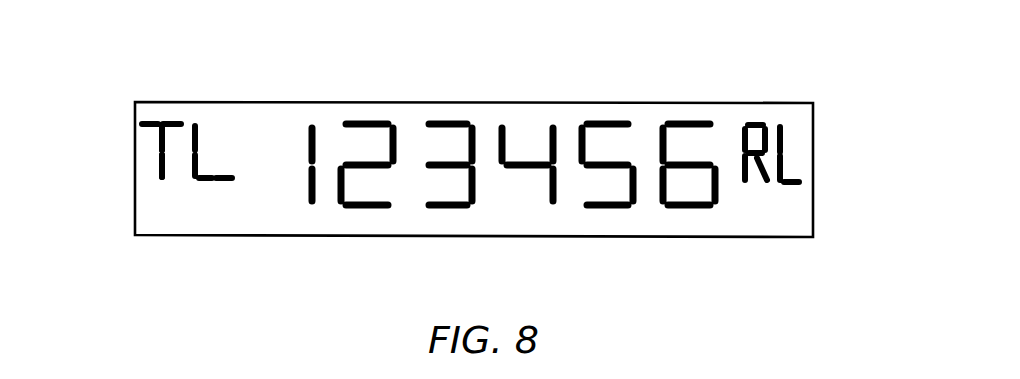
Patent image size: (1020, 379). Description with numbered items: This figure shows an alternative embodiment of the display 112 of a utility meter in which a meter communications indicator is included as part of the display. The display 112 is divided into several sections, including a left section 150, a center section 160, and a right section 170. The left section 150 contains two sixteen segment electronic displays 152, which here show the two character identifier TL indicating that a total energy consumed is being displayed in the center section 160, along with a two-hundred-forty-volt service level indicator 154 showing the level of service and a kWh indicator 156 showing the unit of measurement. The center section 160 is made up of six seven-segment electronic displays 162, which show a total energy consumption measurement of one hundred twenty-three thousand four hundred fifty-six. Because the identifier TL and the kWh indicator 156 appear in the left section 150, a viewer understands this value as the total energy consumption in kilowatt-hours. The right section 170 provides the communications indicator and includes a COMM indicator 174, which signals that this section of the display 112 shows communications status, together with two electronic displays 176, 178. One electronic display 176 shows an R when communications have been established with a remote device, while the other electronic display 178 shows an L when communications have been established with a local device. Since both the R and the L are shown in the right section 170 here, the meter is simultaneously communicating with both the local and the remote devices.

The display 112 is at (278, 110).
The left section 150 is at (186, 110).
The sixteen segment electronic displays 152 is at (152, 153).
The 240V service level indicator 154 is at (160, 208).
The kWh indicator 156 is at (213, 208).
The center section 160 is at (507, 110).
The 7-segment electronic displays 162 is at (607, 125).
The right section 170 is at (770, 112).
The COMM indicator 174 is at (805, 197).
The electronic display 176 is at (750, 125).
The electronic display 178 is at (792, 149).